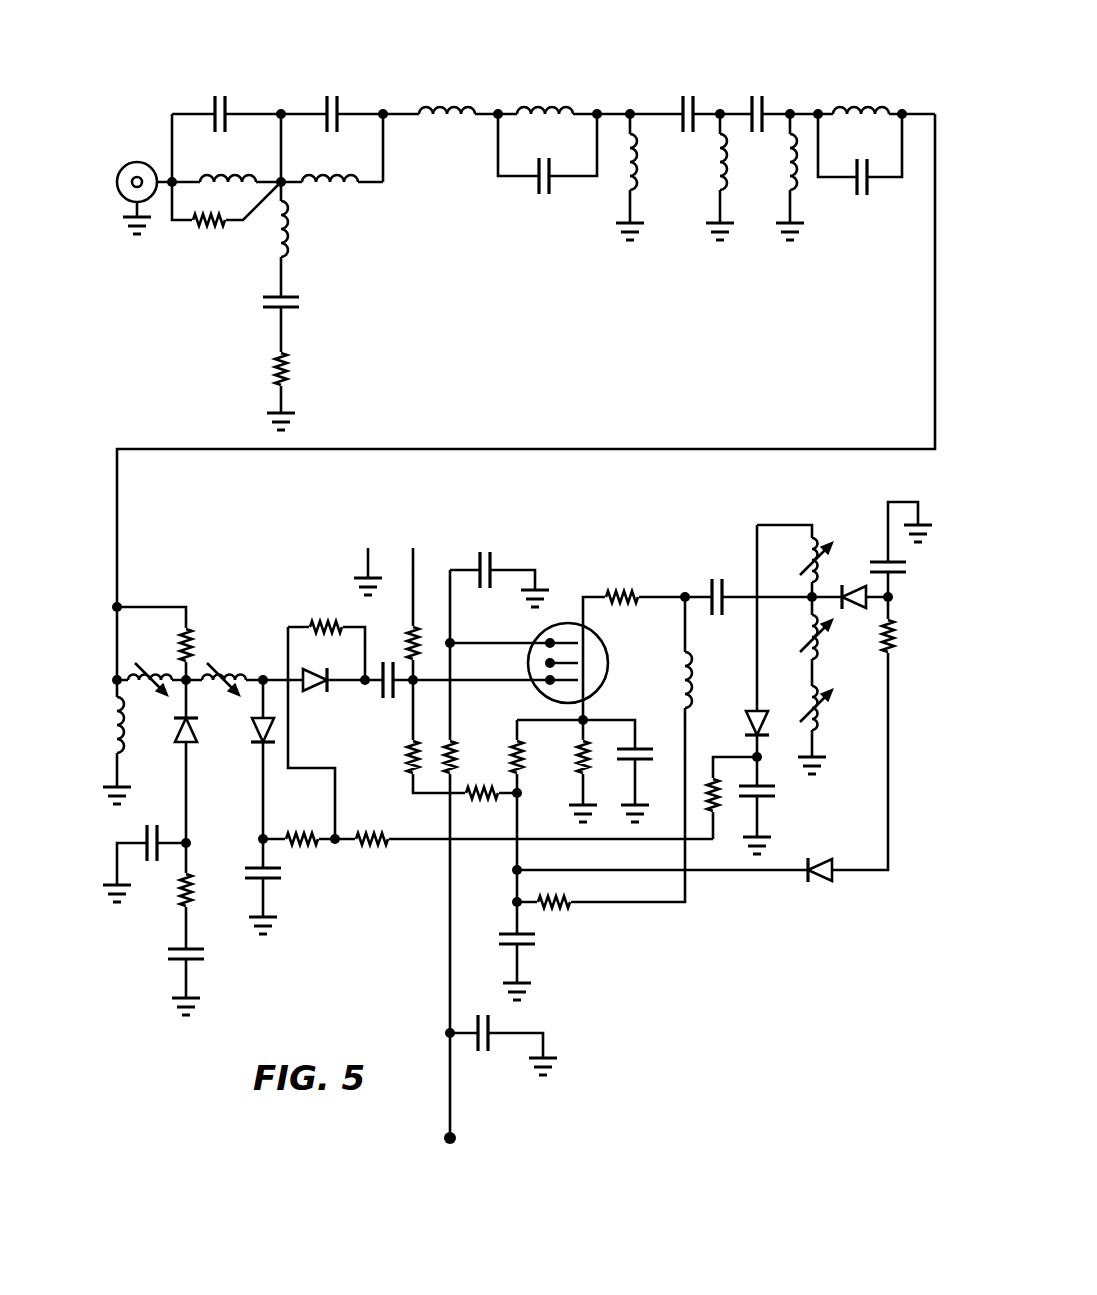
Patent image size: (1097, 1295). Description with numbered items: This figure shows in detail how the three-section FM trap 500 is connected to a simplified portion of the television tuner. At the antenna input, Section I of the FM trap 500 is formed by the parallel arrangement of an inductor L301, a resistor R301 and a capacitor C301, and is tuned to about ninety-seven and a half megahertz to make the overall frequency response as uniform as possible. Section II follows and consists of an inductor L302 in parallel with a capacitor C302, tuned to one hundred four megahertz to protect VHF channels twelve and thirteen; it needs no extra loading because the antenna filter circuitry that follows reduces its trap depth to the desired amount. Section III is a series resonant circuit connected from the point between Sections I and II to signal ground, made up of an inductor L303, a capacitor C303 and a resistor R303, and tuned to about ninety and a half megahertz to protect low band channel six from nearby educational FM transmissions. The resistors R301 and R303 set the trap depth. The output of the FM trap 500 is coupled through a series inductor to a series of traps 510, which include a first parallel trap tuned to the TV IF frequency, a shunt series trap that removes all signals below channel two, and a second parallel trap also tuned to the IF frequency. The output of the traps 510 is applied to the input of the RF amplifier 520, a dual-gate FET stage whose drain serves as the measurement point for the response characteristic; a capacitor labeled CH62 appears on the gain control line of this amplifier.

The FM trap 500 is at (289, 26).
The traps 510 is at (687, 64).
The RF amplifier 520 is at (538, 514).
The capacitor C301 is at (217, 87).
The capacitor C302 is at (331, 87).
The capacitor C303 is at (315, 302).
The inductor L301 is at (228, 166).
The inductor L302 is at (330, 166).
The inductor L303 is at (318, 229).
The resistor R301 is at (210, 236).
The resistor R303 is at (313, 369).
The capacitor CH62 is at (492, 1064).